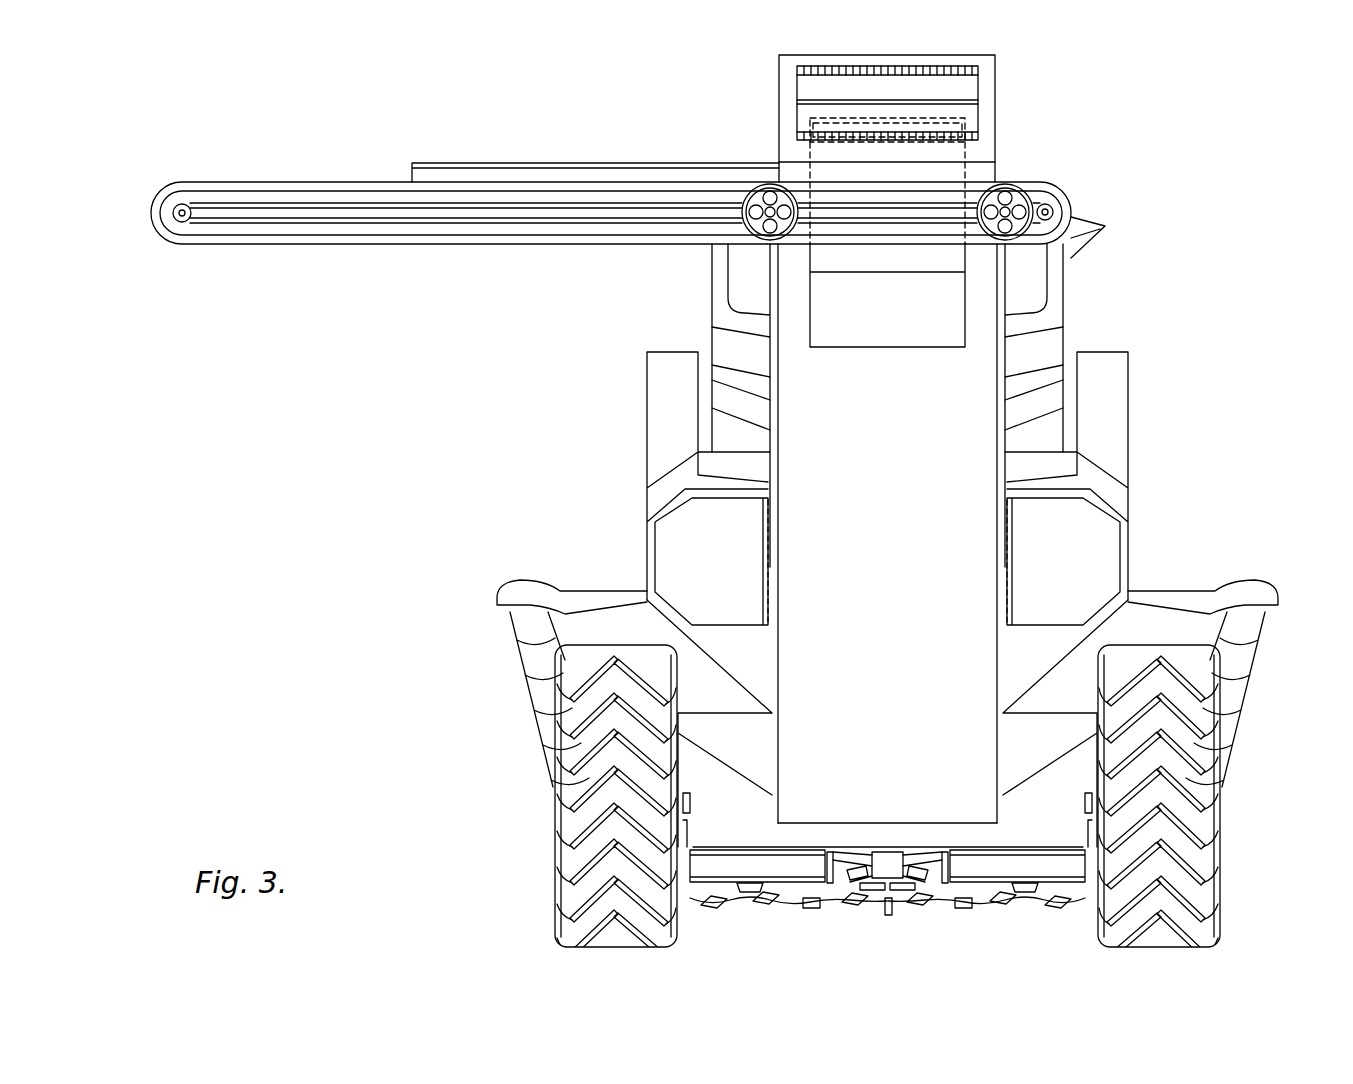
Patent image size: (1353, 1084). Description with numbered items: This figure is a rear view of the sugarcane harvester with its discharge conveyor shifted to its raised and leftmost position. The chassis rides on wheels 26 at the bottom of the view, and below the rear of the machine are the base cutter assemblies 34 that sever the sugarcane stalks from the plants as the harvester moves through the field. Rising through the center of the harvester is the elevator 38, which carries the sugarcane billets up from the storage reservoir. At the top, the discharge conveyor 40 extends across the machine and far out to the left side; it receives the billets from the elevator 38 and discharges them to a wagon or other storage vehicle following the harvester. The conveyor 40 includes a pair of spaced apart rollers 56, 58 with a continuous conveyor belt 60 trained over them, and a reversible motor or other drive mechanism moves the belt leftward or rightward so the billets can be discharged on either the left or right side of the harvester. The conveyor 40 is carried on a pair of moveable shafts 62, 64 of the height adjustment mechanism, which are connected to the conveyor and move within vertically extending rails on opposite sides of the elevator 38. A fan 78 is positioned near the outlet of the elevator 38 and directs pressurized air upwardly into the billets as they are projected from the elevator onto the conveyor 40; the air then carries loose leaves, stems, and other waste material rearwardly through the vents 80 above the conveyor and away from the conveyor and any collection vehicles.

The wheels 26 is at (577, 883).
The base cutter assemblies 34 is at (813, 908).
The elevator 38 is at (980, 362).
The discharge conveyor 40 is at (362, 163).
The roller 56 is at (178, 215).
The roller 58 is at (1047, 211).
The conveyor belt 60 is at (262, 222).
The moveable shaft 62 is at (755, 198).
The moveable shaft 64 is at (1018, 197).
The fan 78 is at (862, 330).
The vents 80 is at (808, 80).